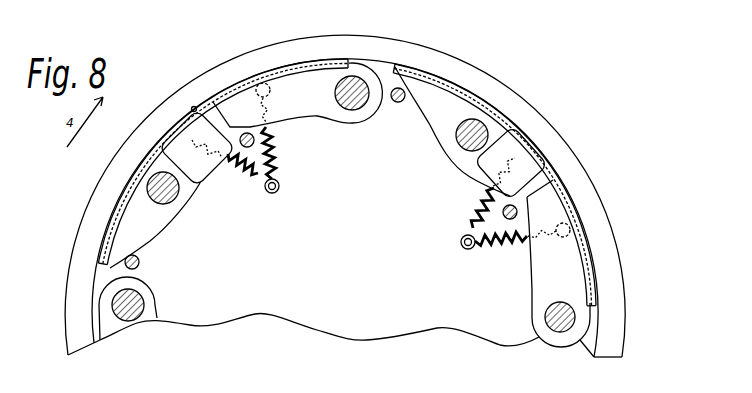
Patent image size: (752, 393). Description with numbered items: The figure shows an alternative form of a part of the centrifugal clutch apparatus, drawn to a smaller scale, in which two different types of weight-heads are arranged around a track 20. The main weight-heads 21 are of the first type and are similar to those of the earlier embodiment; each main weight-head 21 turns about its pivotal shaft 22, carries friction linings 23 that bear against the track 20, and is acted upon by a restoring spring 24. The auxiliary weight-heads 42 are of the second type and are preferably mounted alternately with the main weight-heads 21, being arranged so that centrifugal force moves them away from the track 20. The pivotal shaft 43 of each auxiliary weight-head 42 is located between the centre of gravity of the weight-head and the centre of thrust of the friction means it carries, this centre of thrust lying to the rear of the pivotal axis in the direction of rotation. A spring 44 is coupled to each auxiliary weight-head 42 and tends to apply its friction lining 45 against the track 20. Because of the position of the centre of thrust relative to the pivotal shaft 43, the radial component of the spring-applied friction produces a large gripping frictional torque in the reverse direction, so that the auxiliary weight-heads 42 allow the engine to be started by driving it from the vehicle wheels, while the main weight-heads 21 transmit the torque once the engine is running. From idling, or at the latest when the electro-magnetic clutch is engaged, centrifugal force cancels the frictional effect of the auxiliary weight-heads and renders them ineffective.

The track 20 is at (193, 107).
The main weight-head 21 is at (318, 116).
The pivotal shaft 22 is at (352, 100).
The friction lining 23 is at (320, 58).
The restoring spring 24 is at (270, 128).
The auxiliary weight-head 42 is at (140, 226).
The pivotal shaft 43 is at (176, 200).
The spring 44 is at (250, 177).
The friction lining 45 is at (116, 205).